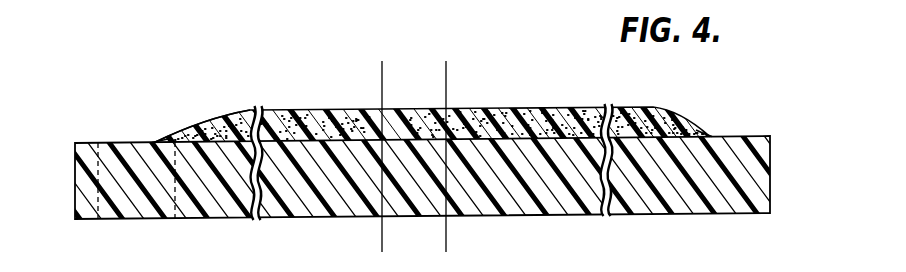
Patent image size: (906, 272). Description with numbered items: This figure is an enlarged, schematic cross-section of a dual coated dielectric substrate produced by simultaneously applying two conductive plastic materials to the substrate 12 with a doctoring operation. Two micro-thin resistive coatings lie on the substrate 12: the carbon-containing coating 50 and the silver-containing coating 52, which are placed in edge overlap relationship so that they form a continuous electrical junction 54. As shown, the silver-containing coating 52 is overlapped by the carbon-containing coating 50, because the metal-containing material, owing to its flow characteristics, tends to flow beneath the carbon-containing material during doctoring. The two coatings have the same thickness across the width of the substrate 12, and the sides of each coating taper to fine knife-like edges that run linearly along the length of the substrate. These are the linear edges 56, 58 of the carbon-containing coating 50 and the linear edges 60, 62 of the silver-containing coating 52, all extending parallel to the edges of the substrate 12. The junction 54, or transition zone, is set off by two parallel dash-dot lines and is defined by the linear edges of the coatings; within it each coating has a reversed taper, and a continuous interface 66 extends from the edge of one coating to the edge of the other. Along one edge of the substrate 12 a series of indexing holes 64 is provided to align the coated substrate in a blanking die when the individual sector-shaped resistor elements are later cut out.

The substrate 12 is at (208, 214).
The carbon-containing coating 50 is at (528, 107).
The silver-containing coating 52 is at (212, 118).
The electrical junction 54 is at (416, 101).
The linear edge 56 is at (154, 140).
The linear edge 58 is at (466, 116).
The linear edge 60 is at (380, 108).
The linear edge 62 is at (710, 135).
The indexing holes 64 is at (100, 168).
The continuous interface 66 is at (403, 108).